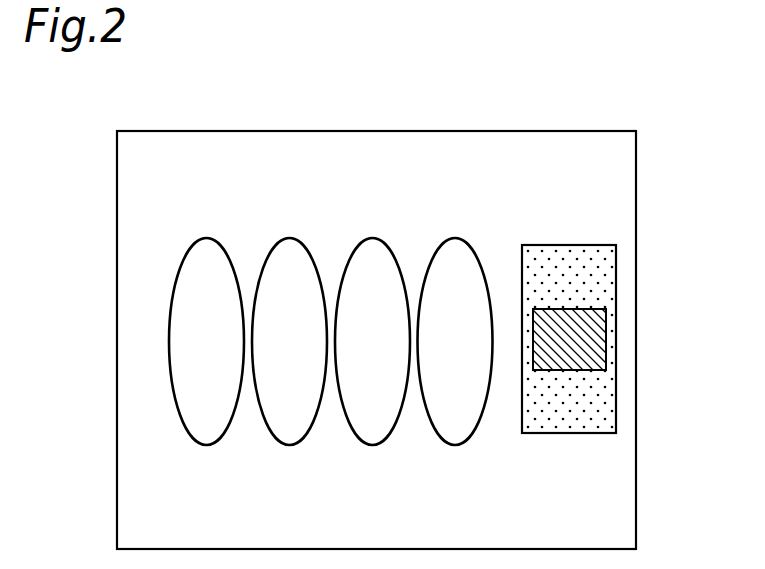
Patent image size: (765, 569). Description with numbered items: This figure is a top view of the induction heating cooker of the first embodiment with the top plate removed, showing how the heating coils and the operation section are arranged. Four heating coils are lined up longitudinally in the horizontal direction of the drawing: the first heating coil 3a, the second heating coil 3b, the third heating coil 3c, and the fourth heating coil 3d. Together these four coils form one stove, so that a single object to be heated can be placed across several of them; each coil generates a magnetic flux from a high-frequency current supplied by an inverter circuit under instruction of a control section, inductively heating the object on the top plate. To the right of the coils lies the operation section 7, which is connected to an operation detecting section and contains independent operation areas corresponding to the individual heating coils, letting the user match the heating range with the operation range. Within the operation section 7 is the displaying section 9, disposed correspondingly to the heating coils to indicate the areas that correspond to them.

The first heating coil 3a is at (455, 238).
The second heating coil 3b is at (372, 238).
The third heating coil 3c is at (289, 238).
The fourth heating coil 3d is at (206, 238).
The operation section 7 is at (616, 280).
The displaying section 9 is at (606, 336).